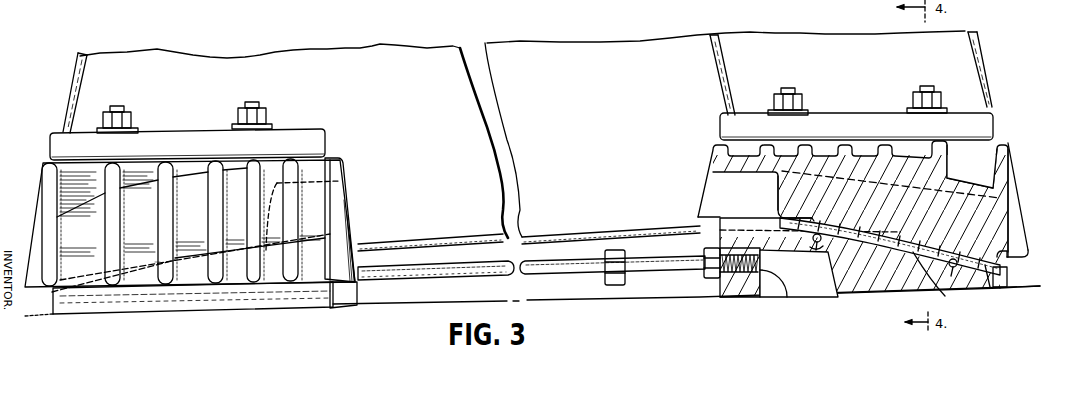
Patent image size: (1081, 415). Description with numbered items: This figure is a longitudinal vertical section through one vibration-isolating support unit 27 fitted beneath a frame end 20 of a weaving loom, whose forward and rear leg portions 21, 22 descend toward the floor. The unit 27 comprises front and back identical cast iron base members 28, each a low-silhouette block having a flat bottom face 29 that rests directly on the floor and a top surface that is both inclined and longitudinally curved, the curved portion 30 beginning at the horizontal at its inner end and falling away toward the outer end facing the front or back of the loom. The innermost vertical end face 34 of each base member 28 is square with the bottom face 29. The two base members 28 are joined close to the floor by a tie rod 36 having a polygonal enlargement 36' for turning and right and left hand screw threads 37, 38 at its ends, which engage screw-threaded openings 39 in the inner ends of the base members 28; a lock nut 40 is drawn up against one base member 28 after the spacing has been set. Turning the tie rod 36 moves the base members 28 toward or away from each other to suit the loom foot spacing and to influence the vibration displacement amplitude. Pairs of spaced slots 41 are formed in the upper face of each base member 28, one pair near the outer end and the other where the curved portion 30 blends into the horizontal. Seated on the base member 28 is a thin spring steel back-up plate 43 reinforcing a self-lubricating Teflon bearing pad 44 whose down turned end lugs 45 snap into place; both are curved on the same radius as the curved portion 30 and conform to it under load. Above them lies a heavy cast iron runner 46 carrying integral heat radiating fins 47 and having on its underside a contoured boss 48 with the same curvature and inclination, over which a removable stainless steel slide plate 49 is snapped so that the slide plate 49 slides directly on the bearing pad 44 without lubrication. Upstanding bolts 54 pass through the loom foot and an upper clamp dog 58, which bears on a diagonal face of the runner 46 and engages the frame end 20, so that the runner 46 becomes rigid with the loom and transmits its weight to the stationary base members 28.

The frame end 20 is at (401, 55).
The forward leg portion 21 is at (967, 90).
The rear leg portion 22 is at (87, 78).
The unit 27 is at (346, 156).
The base member 28 is at (235, 305).
The bottom face 29 is at (890, 292).
The curved portion 30 is at (845, 243).
The innermost vertical end face 34 is at (720, 229).
The tie rod 36 is at (531, 295).
The polygonal enlargement 36' is at (610, 236).
The right hand screw thread 37 is at (732, 292).
The left hand screw thread 38 is at (354, 289).
The screw-threaded opening 39 is at (768, 272).
The lock nut 40 is at (710, 276).
The slot 41 is at (815, 251).
The back-up plate 43 is at (913, 254).
The bearing pad 44 is at (932, 190).
The down turned end lug 45 is at (806, 248).
The runner 46 is at (345, 188).
The heat radiating fin 47 is at (160, 263).
The boss 48 is at (822, 211).
The slide plate 49 is at (1003, 228).
The bolt 54 is at (252, 108).
The upper clamp dog 58 is at (184, 131).